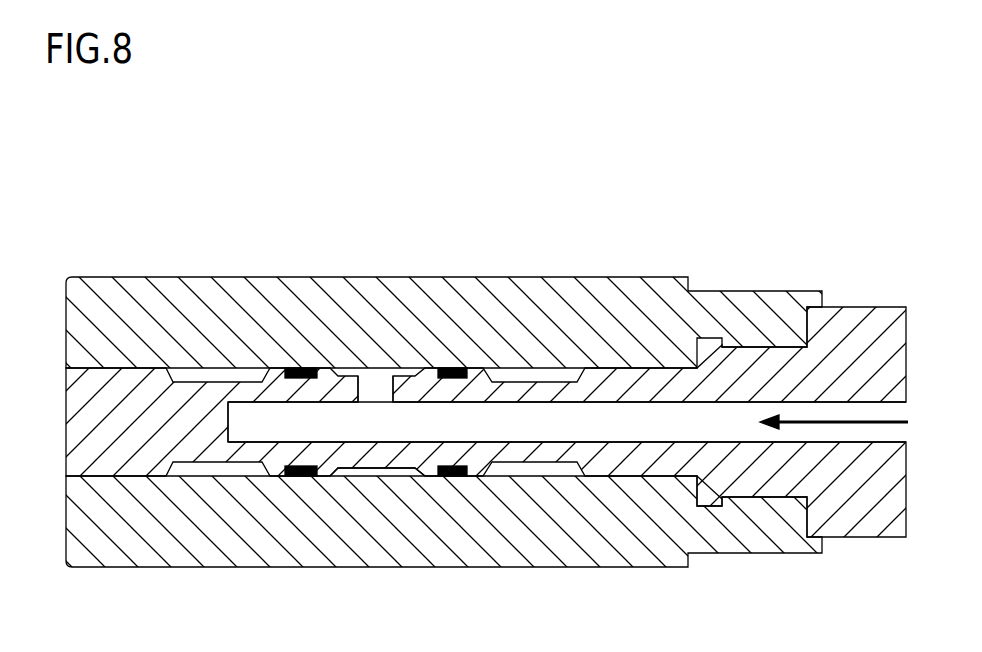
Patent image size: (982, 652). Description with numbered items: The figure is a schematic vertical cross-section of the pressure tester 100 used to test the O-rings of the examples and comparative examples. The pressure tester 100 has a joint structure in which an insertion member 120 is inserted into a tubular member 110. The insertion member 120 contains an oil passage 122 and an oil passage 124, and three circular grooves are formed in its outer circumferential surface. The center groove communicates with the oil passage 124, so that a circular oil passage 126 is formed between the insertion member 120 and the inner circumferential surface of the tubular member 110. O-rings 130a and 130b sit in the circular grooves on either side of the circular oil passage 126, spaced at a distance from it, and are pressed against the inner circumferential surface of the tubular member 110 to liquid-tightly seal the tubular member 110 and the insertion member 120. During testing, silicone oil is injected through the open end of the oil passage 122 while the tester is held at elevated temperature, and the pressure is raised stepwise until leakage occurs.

The pressure tester 100 is at (729, 243).
The tubular member 110 is at (140, 285).
The insertion member 120 is at (867, 340).
The oil passage 122 is at (712, 425).
The oil passage 124 is at (380, 382).
The circular oil passage 126 is at (392, 476).
The O-ring 130a is at (285, 368).
The O-ring 130b is at (462, 368).